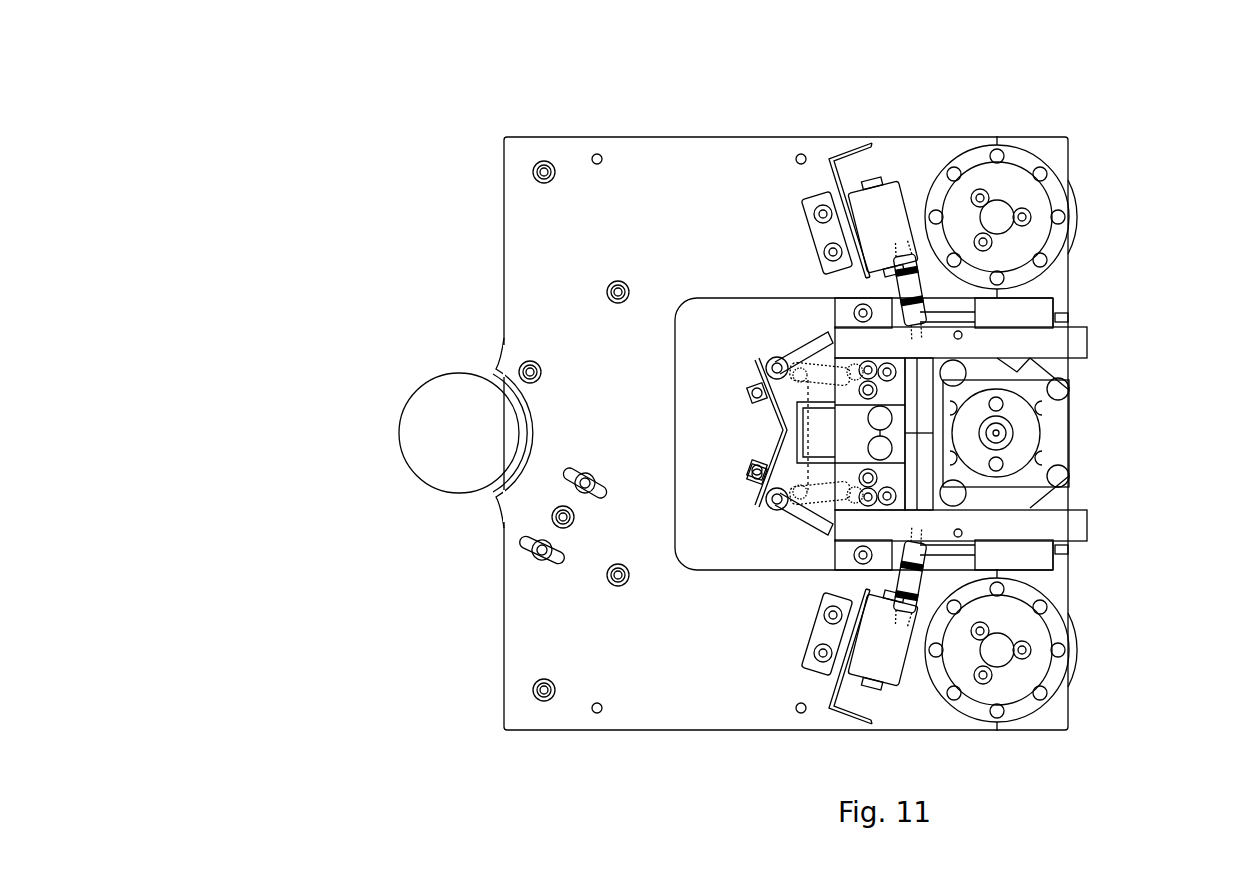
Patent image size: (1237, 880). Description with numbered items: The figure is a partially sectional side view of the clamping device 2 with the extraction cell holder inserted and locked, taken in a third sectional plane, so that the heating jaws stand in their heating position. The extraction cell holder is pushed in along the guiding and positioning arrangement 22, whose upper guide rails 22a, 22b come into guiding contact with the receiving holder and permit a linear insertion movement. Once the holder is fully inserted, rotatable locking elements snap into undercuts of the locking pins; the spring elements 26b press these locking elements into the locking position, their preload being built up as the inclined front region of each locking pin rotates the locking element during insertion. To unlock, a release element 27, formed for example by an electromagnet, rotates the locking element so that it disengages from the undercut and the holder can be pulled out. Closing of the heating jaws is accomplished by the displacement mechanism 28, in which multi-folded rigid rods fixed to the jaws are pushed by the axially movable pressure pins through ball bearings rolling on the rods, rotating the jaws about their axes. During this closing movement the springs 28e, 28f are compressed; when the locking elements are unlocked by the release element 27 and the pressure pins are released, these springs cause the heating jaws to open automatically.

The clamping device 2 is at (422, 108).
The guiding and positioning arrangement 22 is at (1013, 337).
The upper guide rail 22a is at (1068, 335).
The upper guide rail 22b is at (1070, 532).
The spring element 26b is at (908, 270).
The release element 27 is at (885, 220).
The displacement mechanism 28 is at (700, 432).
The spring 28e is at (833, 372).
The spring 28f is at (836, 490).